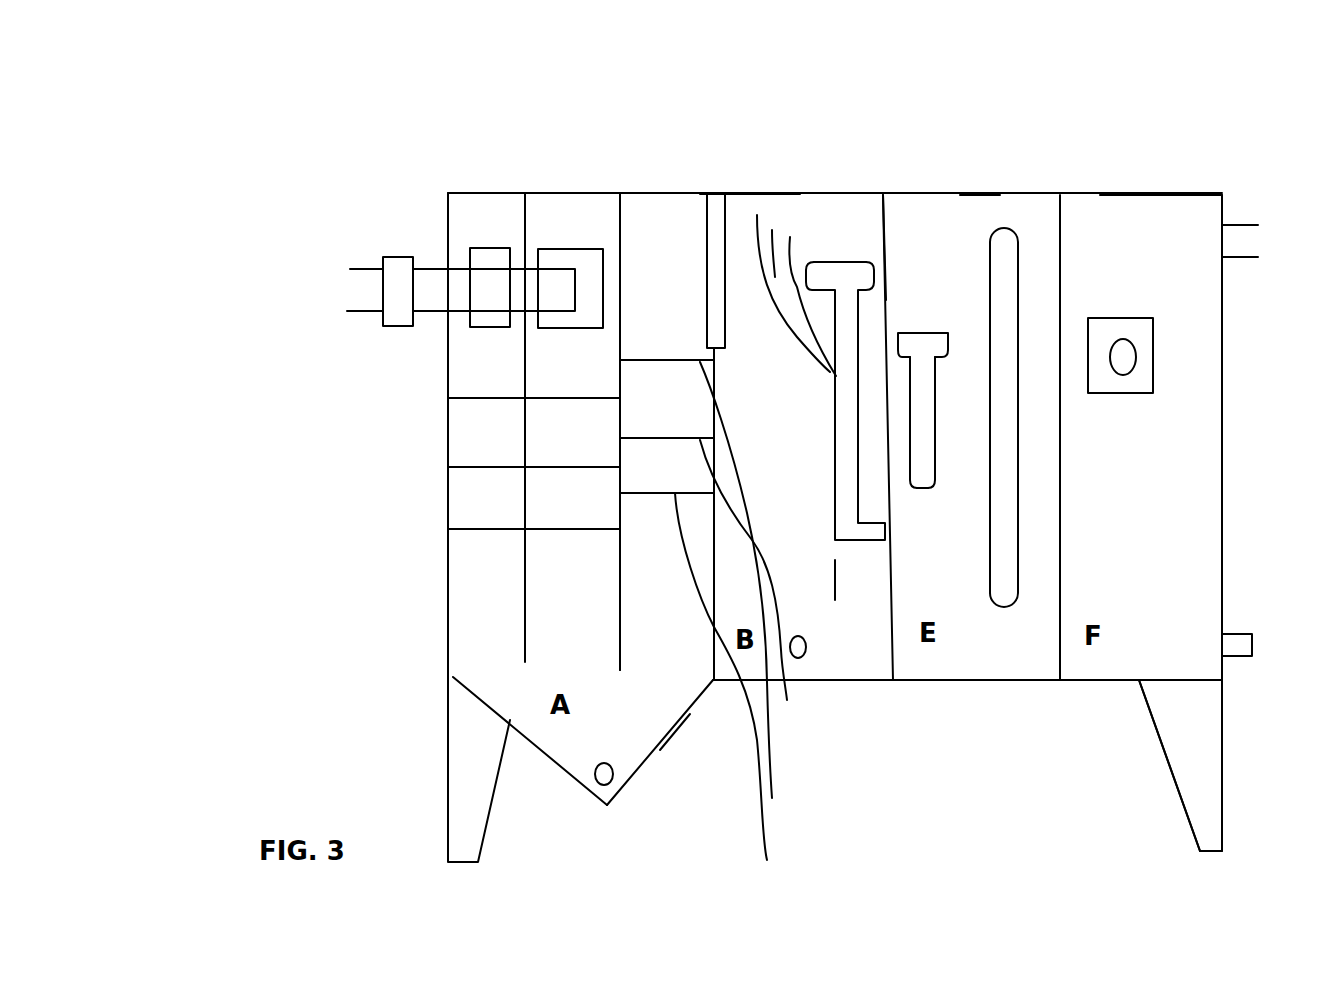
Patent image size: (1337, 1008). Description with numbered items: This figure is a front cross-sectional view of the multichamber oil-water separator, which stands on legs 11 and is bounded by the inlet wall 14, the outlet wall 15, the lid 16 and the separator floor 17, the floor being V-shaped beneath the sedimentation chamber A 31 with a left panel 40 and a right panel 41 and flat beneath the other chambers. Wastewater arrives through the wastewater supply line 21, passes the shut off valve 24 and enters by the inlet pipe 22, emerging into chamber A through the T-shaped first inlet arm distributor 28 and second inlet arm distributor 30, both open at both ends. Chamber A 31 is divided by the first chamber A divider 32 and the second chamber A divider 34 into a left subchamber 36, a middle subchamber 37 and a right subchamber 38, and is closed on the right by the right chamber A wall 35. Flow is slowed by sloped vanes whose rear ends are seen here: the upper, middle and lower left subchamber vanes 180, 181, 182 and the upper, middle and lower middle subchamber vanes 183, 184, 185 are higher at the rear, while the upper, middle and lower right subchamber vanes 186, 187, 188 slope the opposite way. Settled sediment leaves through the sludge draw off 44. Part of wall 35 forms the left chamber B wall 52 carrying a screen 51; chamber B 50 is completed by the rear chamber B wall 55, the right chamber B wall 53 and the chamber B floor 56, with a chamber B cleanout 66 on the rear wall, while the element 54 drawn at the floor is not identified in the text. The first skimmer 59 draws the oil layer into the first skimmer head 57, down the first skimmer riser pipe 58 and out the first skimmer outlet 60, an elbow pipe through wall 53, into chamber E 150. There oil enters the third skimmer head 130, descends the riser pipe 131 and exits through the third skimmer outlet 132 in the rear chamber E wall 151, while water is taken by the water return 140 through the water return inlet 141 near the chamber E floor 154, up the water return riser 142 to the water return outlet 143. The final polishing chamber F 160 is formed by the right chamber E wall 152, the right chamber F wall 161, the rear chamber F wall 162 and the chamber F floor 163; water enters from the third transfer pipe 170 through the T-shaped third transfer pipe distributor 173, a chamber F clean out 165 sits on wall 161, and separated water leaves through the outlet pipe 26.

The legs 11 is at (452, 767).
The inlet wall 14 is at (450, 597).
The outlet wall 15 is at (1224, 585).
The lid 16 is at (743, 200).
The separator floor 17 is at (1119, 680).
The wastewater supply line 21 is at (370, 312).
The inlet pipe 22 is at (430, 268).
The shut off valve 24 is at (397, 257).
The outlet pipe 26 is at (1257, 225).
The first inlet arm distributor 28 is at (490, 248).
The second inlet arm distributor 30 is at (563, 248).
The chamber A 31 is at (615, 717).
The first chamber A divider 32 is at (522, 352).
The second chamber A divider 34 is at (617, 237).
The right chamber A wall 35 is at (717, 653).
The left subchamber 36 is at (492, 632).
The middle subchamber 37 is at (570, 575).
The right subchamber 38 is at (663, 643).
The left panel 40 is at (547, 762).
The right panel 41 is at (627, 783).
The sludge draw off 44 is at (587, 787).
The chamber B 50 is at (847, 620).
The screen 51 is at (704, 268).
The left chamber B wall 52 is at (714, 388).
The right chamber B wall 53 is at (859, 261).
The bottom wall 54 is at (817, 680).
The rear chamber B wall 55 is at (757, 215).
The chamber B floor 56 is at (852, 680).
The first skimmer head 57 is at (837, 261).
The first skimmer riser pipe 58 is at (790, 237).
The first skimmer 59 is at (772, 230).
The first skimmer outlet 60 is at (892, 538).
The chamber B cleanout 66 is at (815, 652).
The third skimmer head 130 is at (925, 333).
The funnel tube 131 is at (935, 392).
The third skimmer outlet 132 is at (928, 490).
The water return 140 is at (1018, 298).
The water return inlet 141 is at (1012, 610).
The water return riser 142 is at (1020, 508).
The water return outlet 143 is at (994, 228).
The chamber E 150 is at (897, 210).
The rear chamber E wall 151 is at (972, 237).
The right chamber E wall 152 is at (1060, 253).
The chamber E floor 154 is at (960, 680).
The chamber F 160 is at (1188, 238).
The right chamber F wall 161 is at (1222, 489).
The rear chamber F wall 162 is at (1140, 240).
The chamber F floor 163 is at (1089, 680).
The chamber F clean out 165 is at (1245, 657).
The third transfer pipe 170 is at (1128, 362).
The third transfer pipe distributor 173 is at (1155, 330).
The upper left subchamber vane 180 is at (487, 398).
The middle left subchamber vane 181 is at (480, 467).
The lower left subchamber vane 182 is at (480, 529).
The upper middle subchamber vane 183 is at (562, 399).
The middle subchamber vane 184 is at (562, 468).
The lower middle subchamber vane 185 is at (570, 530).
The upper right subchamber vane 186 is at (787, 700).
The middle right subchamber vane 187 is at (772, 798).
The lower right subchamber vane 188 is at (767, 860).